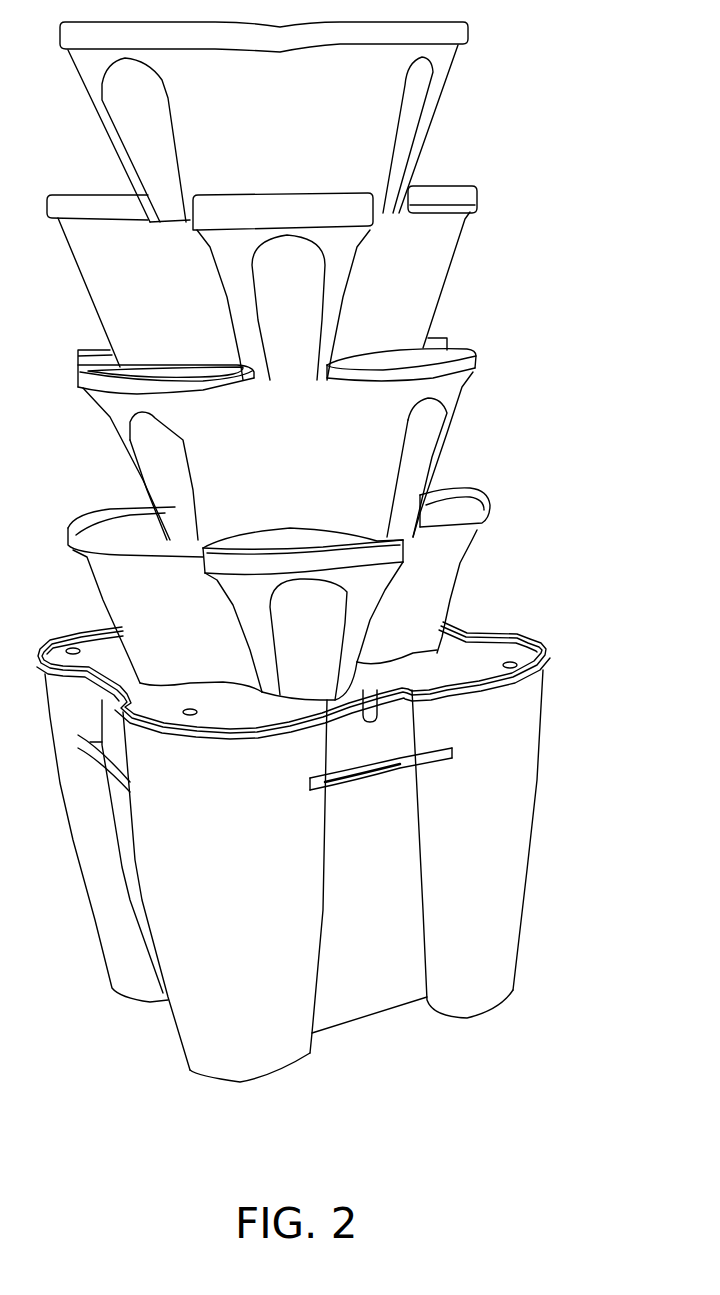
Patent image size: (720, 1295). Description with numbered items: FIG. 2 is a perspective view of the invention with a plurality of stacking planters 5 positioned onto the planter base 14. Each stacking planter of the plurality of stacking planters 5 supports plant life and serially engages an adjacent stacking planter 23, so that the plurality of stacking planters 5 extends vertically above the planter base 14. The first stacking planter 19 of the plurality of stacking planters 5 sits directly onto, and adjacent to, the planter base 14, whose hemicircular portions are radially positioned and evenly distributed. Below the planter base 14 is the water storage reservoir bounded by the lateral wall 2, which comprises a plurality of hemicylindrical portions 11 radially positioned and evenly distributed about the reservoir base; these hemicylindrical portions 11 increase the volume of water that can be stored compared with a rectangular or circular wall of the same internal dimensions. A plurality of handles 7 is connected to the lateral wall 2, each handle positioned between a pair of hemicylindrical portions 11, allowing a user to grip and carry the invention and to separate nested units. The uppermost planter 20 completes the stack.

The lateral wall 2 is at (648, 764).
The plurality of stacking planters 5 is at (641, 383).
The plurality of handles 7 is at (350, 778).
The plurality of hemicylindrical portions 11 is at (485, 862).
The planter base 14 is at (497, 658).
The first stacking planter 19 is at (447, 570).
The top planter pot 20 is at (408, 112).
The adjacent stacking planter 23 is at (417, 297).